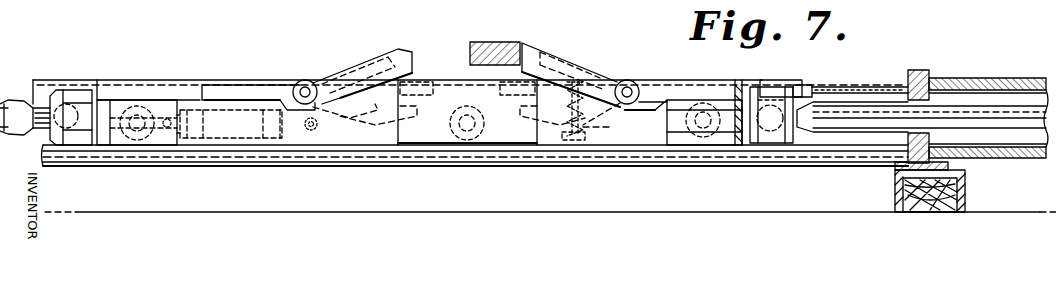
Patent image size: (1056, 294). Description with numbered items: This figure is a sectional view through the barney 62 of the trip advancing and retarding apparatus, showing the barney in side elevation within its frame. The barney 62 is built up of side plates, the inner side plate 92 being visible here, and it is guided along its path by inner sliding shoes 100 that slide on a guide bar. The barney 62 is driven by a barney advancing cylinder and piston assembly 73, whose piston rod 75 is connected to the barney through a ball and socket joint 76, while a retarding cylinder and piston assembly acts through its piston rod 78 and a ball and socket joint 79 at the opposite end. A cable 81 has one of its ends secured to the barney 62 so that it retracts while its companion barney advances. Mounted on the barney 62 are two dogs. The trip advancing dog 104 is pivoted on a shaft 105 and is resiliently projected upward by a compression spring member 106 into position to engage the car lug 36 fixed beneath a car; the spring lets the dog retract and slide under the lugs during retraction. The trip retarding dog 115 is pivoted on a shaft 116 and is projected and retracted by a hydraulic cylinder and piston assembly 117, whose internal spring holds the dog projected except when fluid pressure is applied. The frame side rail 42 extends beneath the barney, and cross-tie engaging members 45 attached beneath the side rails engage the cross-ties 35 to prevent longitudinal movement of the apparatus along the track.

The cross-ties 35 is at (963, 189).
The car lug 36 is at (492, 42).
The side rail 42 is at (357, 168).
The cross-tie engaging members 45 is at (896, 174).
The barney 62 is at (510, 135).
The barney advancing cylinder and piston assembly 73 is at (974, 79).
The piston rod 75 is at (871, 105).
The ball and socket joint 76 is at (767, 138).
The piston rod 78 is at (21, 100).
The ball and socket joint 79 is at (68, 90).
The cable 81 is at (837, 87).
The inner side plate 92 is at (430, 134).
The inner sliding shoes 100 is at (133, 98).
The trip advancing dog 104 is at (563, 58).
The shaft 105 is at (630, 85).
The compression spring member 106 is at (604, 111).
The trip retarding dog 115 is at (400, 48).
The shaft 116 is at (303, 81).
The hydraulic cylinder and piston assembly 117 is at (227, 138).